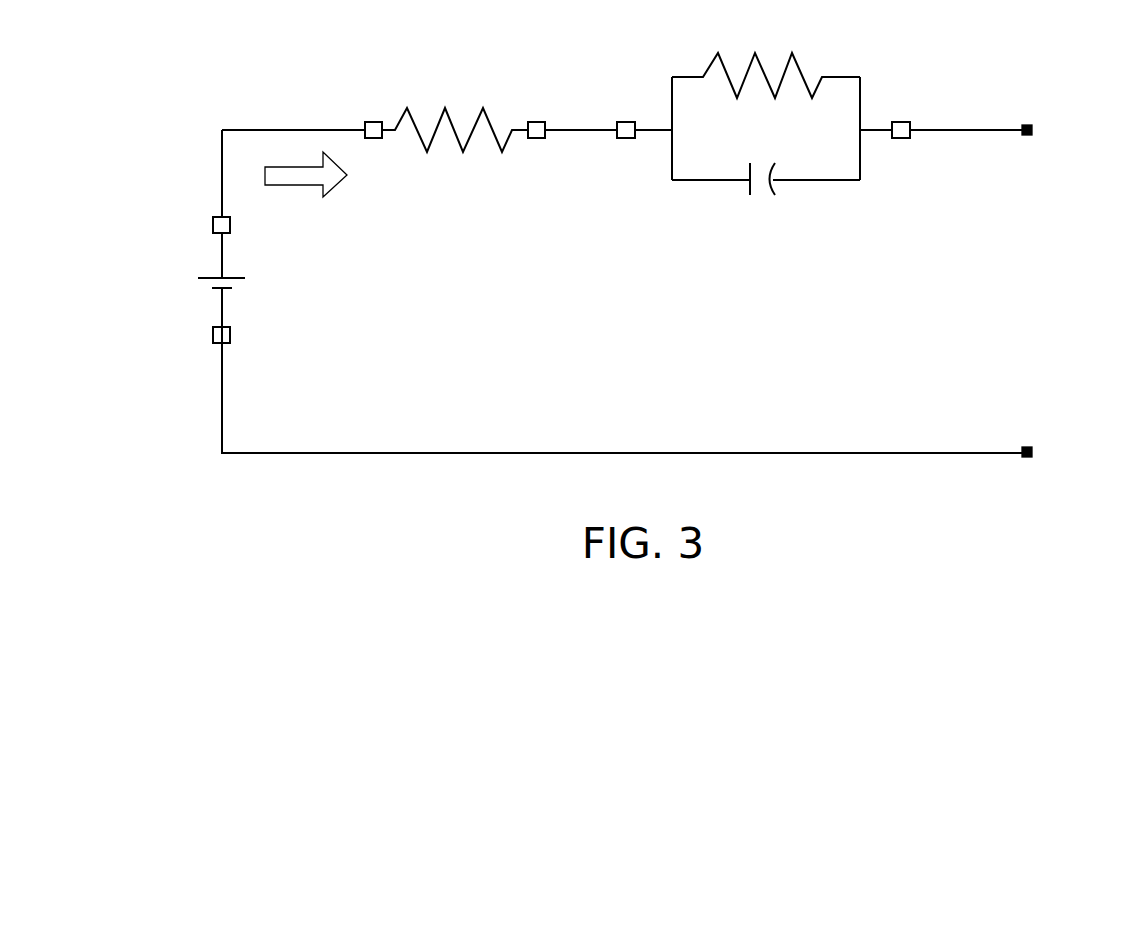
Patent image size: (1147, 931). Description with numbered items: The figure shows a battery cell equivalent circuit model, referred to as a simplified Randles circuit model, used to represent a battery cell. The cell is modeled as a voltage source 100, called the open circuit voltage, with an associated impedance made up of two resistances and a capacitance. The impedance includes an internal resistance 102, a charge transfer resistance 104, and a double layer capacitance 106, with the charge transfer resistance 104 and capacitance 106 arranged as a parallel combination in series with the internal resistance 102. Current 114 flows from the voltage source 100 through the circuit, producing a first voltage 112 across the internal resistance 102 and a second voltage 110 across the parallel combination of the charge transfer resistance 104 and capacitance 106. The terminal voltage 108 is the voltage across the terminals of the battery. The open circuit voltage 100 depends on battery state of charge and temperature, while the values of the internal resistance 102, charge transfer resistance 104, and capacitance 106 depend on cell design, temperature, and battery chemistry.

The voltage source 100 is at (233, 277).
The internal resistance 102 is at (400, 120).
The charge transfer resistance 104 is at (803, 72).
The double layer capacitance 106 is at (747, 188).
The terminal voltage 108 is at (1043, 328).
The voltage V2 110 is at (745, 125).
The voltage V1 112 is at (445, 210).
The current 114 is at (278, 92).